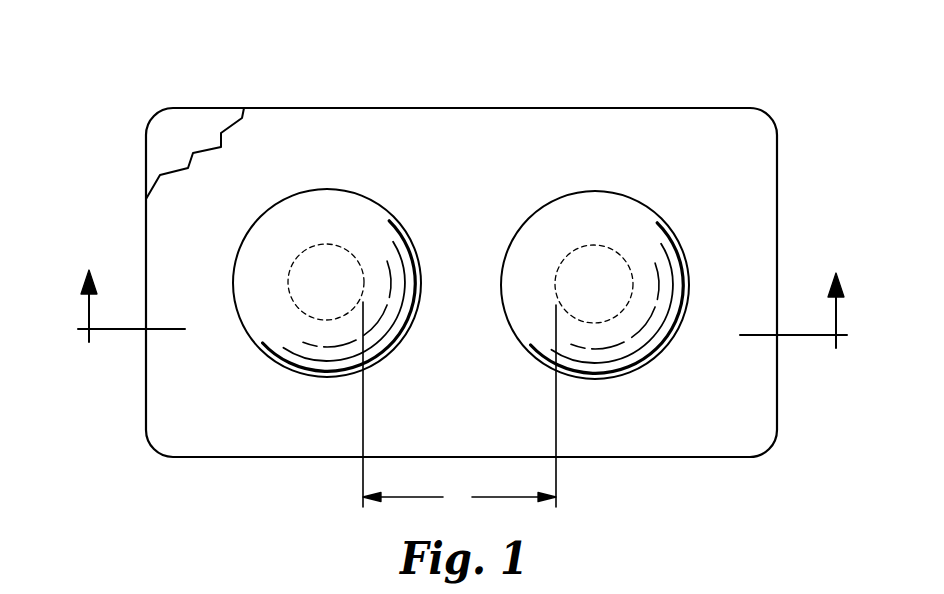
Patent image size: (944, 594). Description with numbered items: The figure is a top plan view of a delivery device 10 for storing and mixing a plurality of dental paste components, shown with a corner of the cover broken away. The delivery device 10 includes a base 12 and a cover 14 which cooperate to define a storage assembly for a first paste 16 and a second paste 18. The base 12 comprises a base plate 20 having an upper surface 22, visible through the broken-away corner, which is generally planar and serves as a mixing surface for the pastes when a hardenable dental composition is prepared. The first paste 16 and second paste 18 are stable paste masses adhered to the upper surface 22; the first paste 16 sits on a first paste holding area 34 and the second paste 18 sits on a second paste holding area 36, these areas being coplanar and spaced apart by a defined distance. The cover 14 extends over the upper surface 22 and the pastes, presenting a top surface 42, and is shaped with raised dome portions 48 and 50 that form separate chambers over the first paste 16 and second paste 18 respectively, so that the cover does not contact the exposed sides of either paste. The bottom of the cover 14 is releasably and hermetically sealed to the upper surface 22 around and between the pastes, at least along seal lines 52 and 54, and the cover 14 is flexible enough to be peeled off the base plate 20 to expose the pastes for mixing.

The delivery device 10 is at (460, 268).
The base 12 is at (145, 150).
The cover 14 is at (333, 108).
The first paste 16 is at (339, 256).
The second paste 18 is at (614, 253).
The base plate 20 is at (223, 118).
The upper surface 22 is at (162, 144).
The first paste holding area 34 is at (287, 288).
The second paste holding area 36 is at (561, 262).
The top surface 42 is at (436, 149).
The dome portion 48 is at (280, 212).
The dome portion 50 is at (560, 210).
The seal line 52 is at (397, 348).
The seal line 54 is at (650, 353).